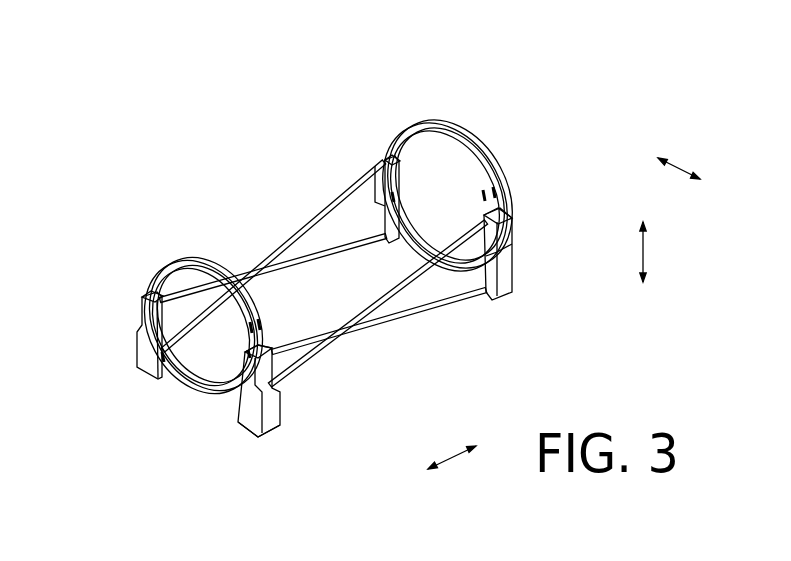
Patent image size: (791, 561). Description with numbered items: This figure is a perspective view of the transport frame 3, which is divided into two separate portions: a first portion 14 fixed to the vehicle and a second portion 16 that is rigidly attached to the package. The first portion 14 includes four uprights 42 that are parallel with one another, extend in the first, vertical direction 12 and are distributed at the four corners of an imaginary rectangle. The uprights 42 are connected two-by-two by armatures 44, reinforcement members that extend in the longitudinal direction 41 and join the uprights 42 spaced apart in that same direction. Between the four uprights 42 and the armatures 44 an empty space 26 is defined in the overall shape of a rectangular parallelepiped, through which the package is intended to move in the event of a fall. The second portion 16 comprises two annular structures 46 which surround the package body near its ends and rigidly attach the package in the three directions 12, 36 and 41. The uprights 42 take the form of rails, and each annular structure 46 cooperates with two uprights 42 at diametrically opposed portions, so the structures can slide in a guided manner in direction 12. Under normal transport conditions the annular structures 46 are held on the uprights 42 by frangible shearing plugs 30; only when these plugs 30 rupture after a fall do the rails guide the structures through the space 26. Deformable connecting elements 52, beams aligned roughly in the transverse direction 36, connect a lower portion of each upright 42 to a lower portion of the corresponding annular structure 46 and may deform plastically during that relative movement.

The frame 3 is at (253, 97).
The first direction 12 is at (648, 250).
The first portion 14 is at (240, 431).
The second portion 16 is at (200, 258).
The empty space 26 is at (317, 301).
The frangible shearing plug 30 is at (150, 301).
The transverse direction 36 is at (680, 170).
The longitudinal direction 41 is at (455, 455).
The upright 42 is at (364, 162).
The armature 44 is at (345, 197).
The annular structure 46 is at (402, 128).
The deformable connecting element 52 is at (170, 372).